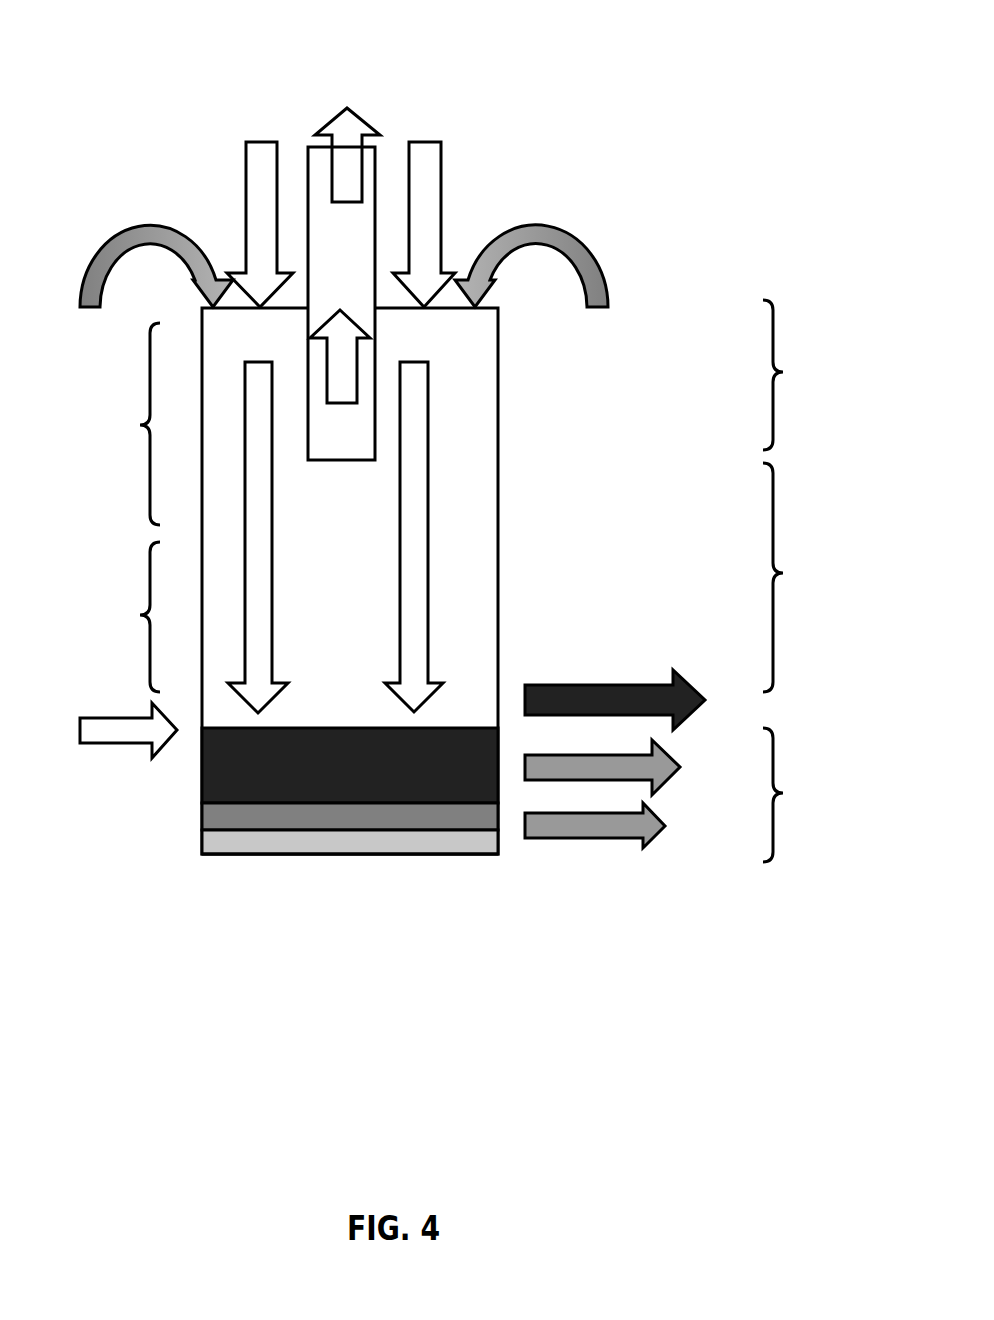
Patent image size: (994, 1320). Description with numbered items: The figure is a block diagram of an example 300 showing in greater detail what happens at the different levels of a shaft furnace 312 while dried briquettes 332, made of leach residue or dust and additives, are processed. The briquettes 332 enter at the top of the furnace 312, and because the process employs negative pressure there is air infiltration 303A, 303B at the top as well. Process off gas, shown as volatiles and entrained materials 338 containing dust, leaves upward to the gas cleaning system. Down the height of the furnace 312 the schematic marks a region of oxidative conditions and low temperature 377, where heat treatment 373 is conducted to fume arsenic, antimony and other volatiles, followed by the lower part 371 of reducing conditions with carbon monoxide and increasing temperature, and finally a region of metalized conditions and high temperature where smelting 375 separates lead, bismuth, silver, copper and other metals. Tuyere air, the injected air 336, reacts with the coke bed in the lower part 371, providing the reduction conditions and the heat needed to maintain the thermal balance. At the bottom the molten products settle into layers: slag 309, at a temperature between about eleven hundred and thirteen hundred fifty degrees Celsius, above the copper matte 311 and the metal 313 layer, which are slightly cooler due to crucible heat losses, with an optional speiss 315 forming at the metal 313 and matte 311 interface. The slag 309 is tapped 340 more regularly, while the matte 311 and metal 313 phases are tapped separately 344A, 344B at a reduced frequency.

The example 300 is at (433, 458).
The air infiltration 303A is at (151, 280).
The air infiltration 303B is at (539, 280).
The slag 309 is at (213, 790).
The copper matte 311 is at (235, 813).
The shaft furnace 312 is at (499, 512).
The metal layer 313 is at (270, 840).
The speiss 315 is at (485, 830).
The dried briquettes 332 is at (248, 194).
The injected air 336 is at (103, 730).
The volatiles and entrained materials 338 is at (344, 271).
The slag tapping 340 is at (615, 696).
The matte tapping 344A is at (602, 763).
The metal tapping 344B is at (595, 819).
The lower part of the furnace 371 is at (773, 573).
The heat treatment 373 is at (150, 425).
The smelting 375 is at (150, 615).
The region of oxidative conditions and low temperature 377 is at (773, 372).